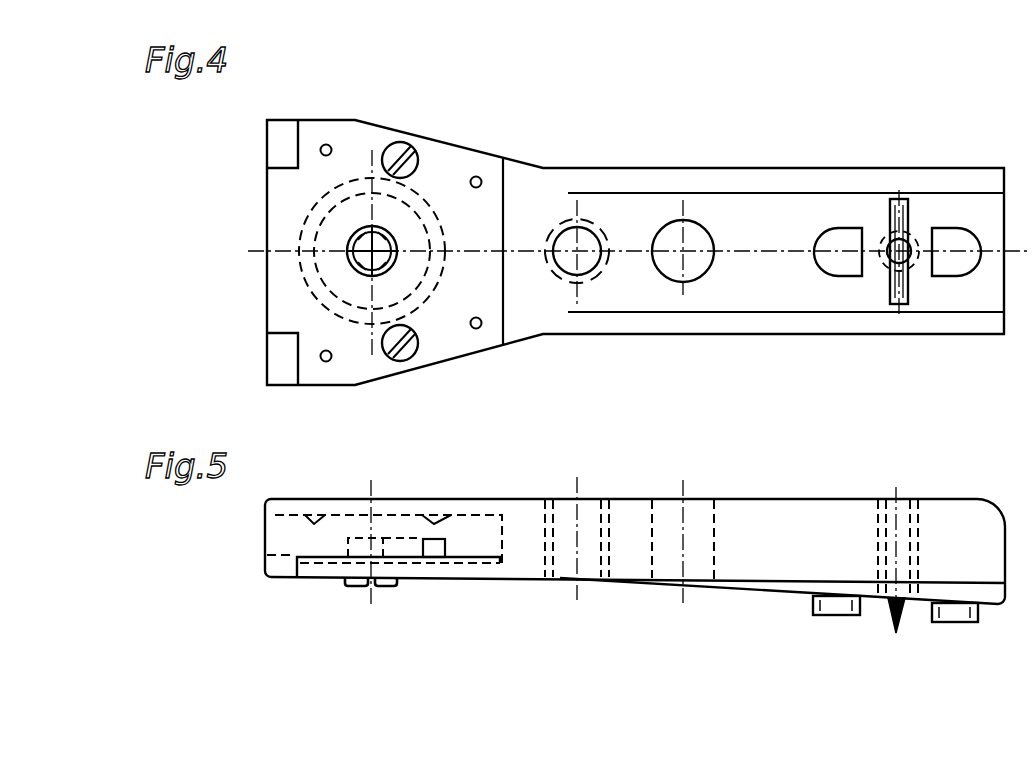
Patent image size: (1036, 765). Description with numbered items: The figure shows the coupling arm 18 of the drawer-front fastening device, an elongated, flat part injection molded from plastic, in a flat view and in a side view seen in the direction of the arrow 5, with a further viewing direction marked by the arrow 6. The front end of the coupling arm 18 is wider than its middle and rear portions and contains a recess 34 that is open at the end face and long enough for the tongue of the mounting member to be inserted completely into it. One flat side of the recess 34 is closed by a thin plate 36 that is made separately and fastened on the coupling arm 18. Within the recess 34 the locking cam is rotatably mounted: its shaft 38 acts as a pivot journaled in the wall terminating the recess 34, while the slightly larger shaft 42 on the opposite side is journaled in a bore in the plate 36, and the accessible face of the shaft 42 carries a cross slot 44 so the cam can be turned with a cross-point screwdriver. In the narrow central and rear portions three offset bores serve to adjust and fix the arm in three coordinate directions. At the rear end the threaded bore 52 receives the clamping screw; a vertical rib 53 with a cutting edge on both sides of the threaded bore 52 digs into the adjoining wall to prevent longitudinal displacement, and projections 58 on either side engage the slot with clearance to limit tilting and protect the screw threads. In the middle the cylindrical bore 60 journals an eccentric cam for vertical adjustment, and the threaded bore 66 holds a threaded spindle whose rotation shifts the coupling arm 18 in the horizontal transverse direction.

In FIG. 4, the coupling arm 18 is at (562, 122).
In FIG. 5, the coupling arm 18 is at (651, 484).
In FIG. 4, the arrow 5 is at (647, 127).
In FIG. 4, the arrow 6 is at (200, 282).
In FIG. 5, the recess 34 is at (304, 486).
In FIG. 4, the plate 36 is at (440, 170).
In FIG. 5, the plate 36 is at (478, 567).
In FIG. 5, the shaft 38 is at (375, 523).
In FIG. 4, the shaft 42 is at (371, 276).
In FIG. 5, the shaft 42 is at (388, 587).
In FIG. 5, the cross slot 44 is at (367, 588).
In FIG. 4, the threaded bore 52 is at (905, 248).
In FIG. 5, the threaded bore 52 is at (913, 502).
In FIG. 4, the vertical rib 53 is at (898, 197).
In FIG. 5, the vertical rib 53 is at (902, 620).
In FIG. 4, the projections 58 is at (853, 238).
In FIG. 5, the projections 58 is at (832, 613).
In FIG. 4, the cylindrical bore 60 is at (658, 240).
In FIG. 5, the cylindrical bore 60 is at (712, 538).
In FIG. 4, the threaded bore 66 is at (558, 247).
In FIG. 5, the threaded bore 66 is at (573, 560).